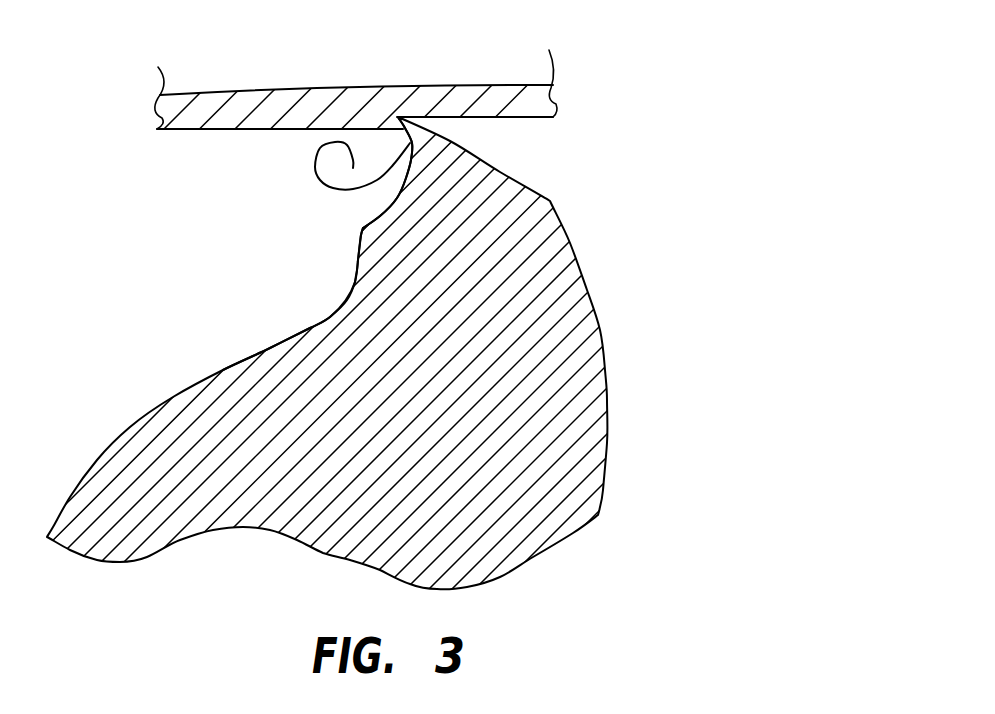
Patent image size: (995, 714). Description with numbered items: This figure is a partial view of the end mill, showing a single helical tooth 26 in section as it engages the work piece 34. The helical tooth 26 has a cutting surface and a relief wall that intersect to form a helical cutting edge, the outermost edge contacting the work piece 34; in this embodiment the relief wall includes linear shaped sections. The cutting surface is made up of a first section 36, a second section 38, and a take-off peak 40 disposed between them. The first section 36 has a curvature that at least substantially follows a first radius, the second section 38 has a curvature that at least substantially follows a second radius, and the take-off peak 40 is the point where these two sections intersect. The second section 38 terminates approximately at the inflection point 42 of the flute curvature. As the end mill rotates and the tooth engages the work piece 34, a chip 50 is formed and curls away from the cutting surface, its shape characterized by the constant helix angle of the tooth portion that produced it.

The helical tooth 26 is at (565, 202).
The work piece 34 is at (553, 56).
The first section 36 is at (390, 207).
The second section 38 is at (353, 282).
The take-off peak 40 is at (360, 230).
The inflection point 42 is at (310, 328).
The chip 50 is at (333, 143).